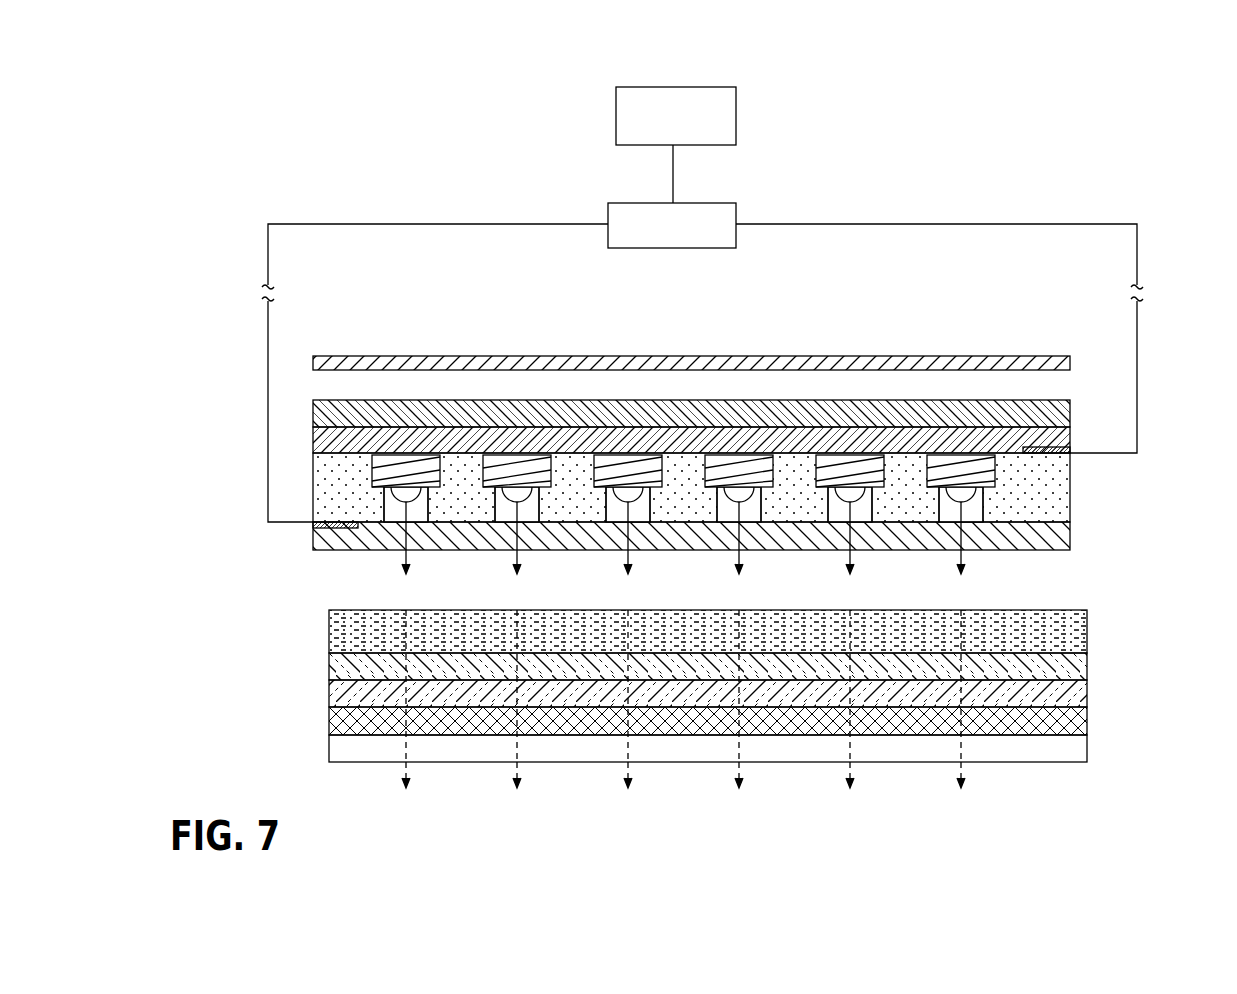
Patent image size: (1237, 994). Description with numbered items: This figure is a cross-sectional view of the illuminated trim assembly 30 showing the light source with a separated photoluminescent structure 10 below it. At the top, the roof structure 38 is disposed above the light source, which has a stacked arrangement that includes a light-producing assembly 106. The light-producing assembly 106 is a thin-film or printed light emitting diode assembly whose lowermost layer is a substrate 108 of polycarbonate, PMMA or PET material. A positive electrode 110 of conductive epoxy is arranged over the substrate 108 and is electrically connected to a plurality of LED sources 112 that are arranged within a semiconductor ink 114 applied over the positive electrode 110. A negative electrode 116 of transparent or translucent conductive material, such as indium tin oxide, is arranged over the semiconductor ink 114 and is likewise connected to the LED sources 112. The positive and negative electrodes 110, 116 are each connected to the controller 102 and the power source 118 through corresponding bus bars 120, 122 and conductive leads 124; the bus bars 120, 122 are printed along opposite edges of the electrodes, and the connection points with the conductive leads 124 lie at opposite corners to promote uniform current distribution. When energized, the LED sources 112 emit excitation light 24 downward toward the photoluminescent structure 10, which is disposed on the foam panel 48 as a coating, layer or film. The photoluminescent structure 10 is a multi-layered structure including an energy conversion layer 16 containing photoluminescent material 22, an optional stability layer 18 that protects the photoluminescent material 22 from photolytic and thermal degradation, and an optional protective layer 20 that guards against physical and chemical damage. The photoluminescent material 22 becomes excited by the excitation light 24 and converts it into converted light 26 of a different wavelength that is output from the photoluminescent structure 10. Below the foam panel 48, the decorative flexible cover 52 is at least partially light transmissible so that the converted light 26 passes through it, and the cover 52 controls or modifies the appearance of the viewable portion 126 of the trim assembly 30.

The power source 118 is at (688, 87).
The controller 102 is at (724, 203).
The conductive leads 124 is at (266, 371).
The roof structure 38 is at (1015, 357).
The trim assembly 30 is at (686, 432).
The light-producing assembly 106 is at (660, 432).
The substrate 108 is at (1068, 410).
The positive electrode 110 is at (313, 440).
The LED sources 112 is at (683, 405).
The semiconductor ink 114 is at (1058, 470).
The negative electrode 116 is at (1068, 530).
The bus bar 120 is at (1065, 448).
The bus bar 122 is at (292, 549).
The excitation light 24 is at (410, 557).
The photoluminescent structure 10 is at (700, 673).
The photoluminescent material 22 is at (364, 618).
The energy conversion layer 16 is at (329, 634).
The stability layer 18 is at (329, 668).
The protective layer 20 is at (329, 696).
The foam panel 48 is at (329, 725).
The cover 52 is at (329, 754).
The converted light 26 is at (406, 744).
The viewable portion 126 is at (684, 788).